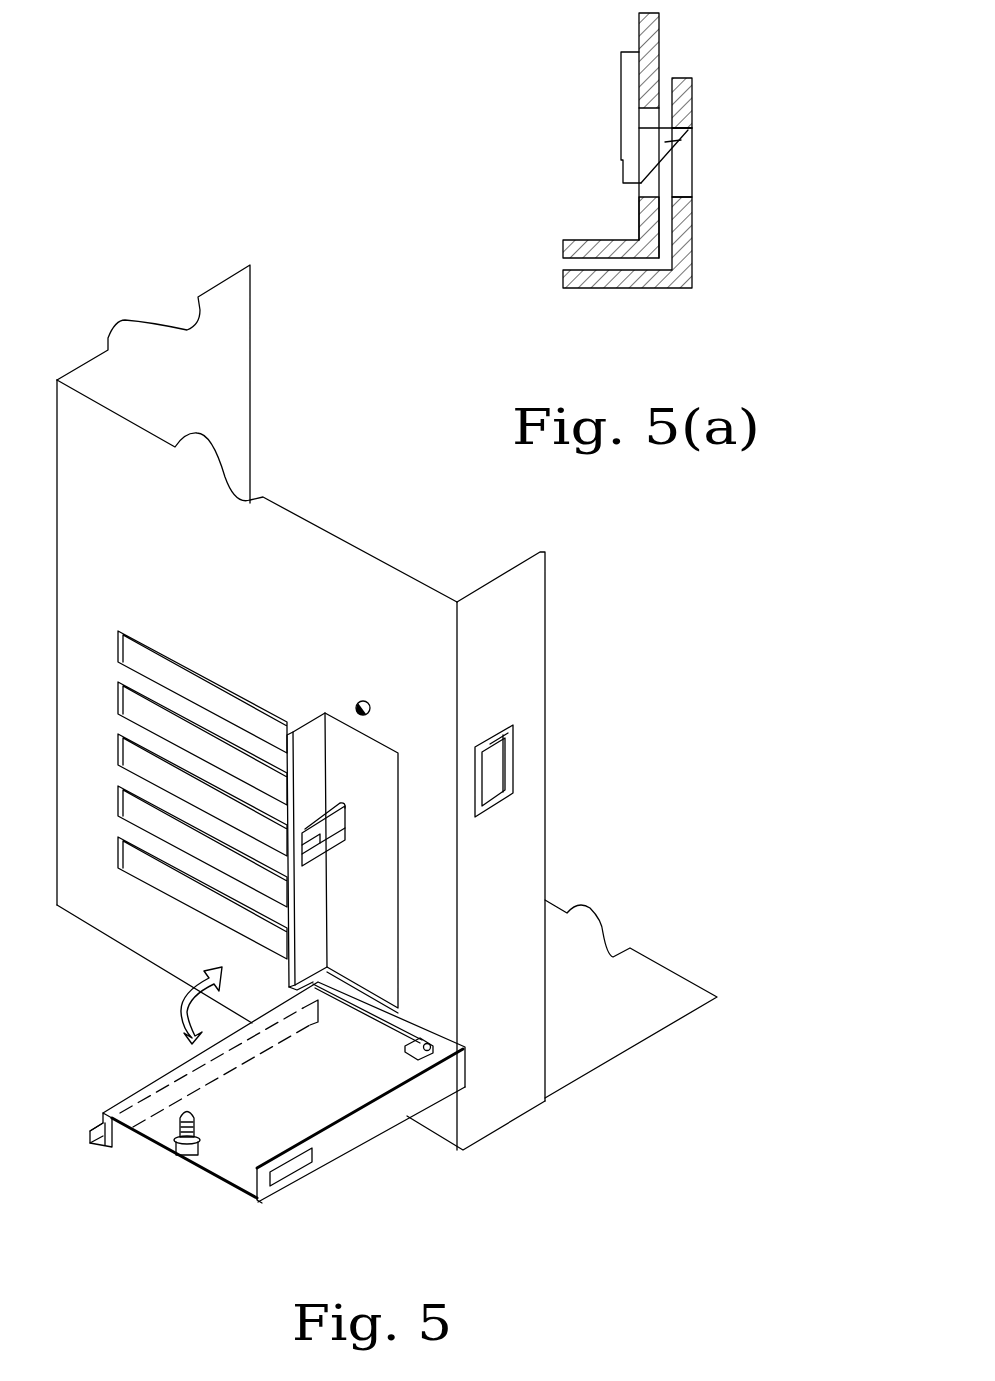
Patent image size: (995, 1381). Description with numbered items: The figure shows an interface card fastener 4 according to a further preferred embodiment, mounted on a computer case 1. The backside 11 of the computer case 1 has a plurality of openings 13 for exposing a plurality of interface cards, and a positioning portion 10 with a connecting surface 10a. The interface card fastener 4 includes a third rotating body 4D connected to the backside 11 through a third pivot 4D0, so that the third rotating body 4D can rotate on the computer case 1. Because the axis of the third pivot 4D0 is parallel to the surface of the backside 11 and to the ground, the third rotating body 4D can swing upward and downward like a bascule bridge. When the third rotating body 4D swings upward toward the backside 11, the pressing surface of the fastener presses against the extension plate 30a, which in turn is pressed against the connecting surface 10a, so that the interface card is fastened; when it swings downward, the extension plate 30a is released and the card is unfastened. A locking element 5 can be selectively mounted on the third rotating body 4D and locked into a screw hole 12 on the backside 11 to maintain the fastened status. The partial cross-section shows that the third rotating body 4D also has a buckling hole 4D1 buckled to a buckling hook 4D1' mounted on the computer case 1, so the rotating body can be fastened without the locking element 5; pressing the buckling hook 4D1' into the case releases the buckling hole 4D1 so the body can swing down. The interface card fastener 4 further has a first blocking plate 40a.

In FIG. 5A, the computer case 1 is at (592, 243).
In FIG. 5, the computer case 1 is at (165, 240).
In FIG. 5, the backside 11 is at (103, 928).
In FIG. 5, the openings 13 is at (115, 630).
In FIG. 5, the screw hole 12 is at (371, 703).
In FIG. 5, the positioning portion 10 is at (302, 715).
In FIG. 5, the connecting surface 10a is at (315, 890).
In FIG. 5, the extension plate 30a is at (337, 834).
In FIG. 5A, the buckling hook 4D1' is at (741, 99).
In FIG. 5, the buckling hook 4D1' is at (552, 770).
In FIG. 5A, the buckling hole 4D1 is at (725, 162).
In FIG. 5, the buckling hole 4D1 is at (301, 1200).
In FIG. 5A, the third rotating body 4D is at (617, 286).
In FIG. 5, the third rotating body 4D is at (220, 1100).
In FIG. 5, the third pivot 4D0 is at (415, 1032).
In FIG. 5, the interface card fastener 4 is at (112, 1147).
In FIG. 5, the first blocking plate 40a is at (88, 1135).
In FIG. 5, the locking element 5 is at (188, 1162).